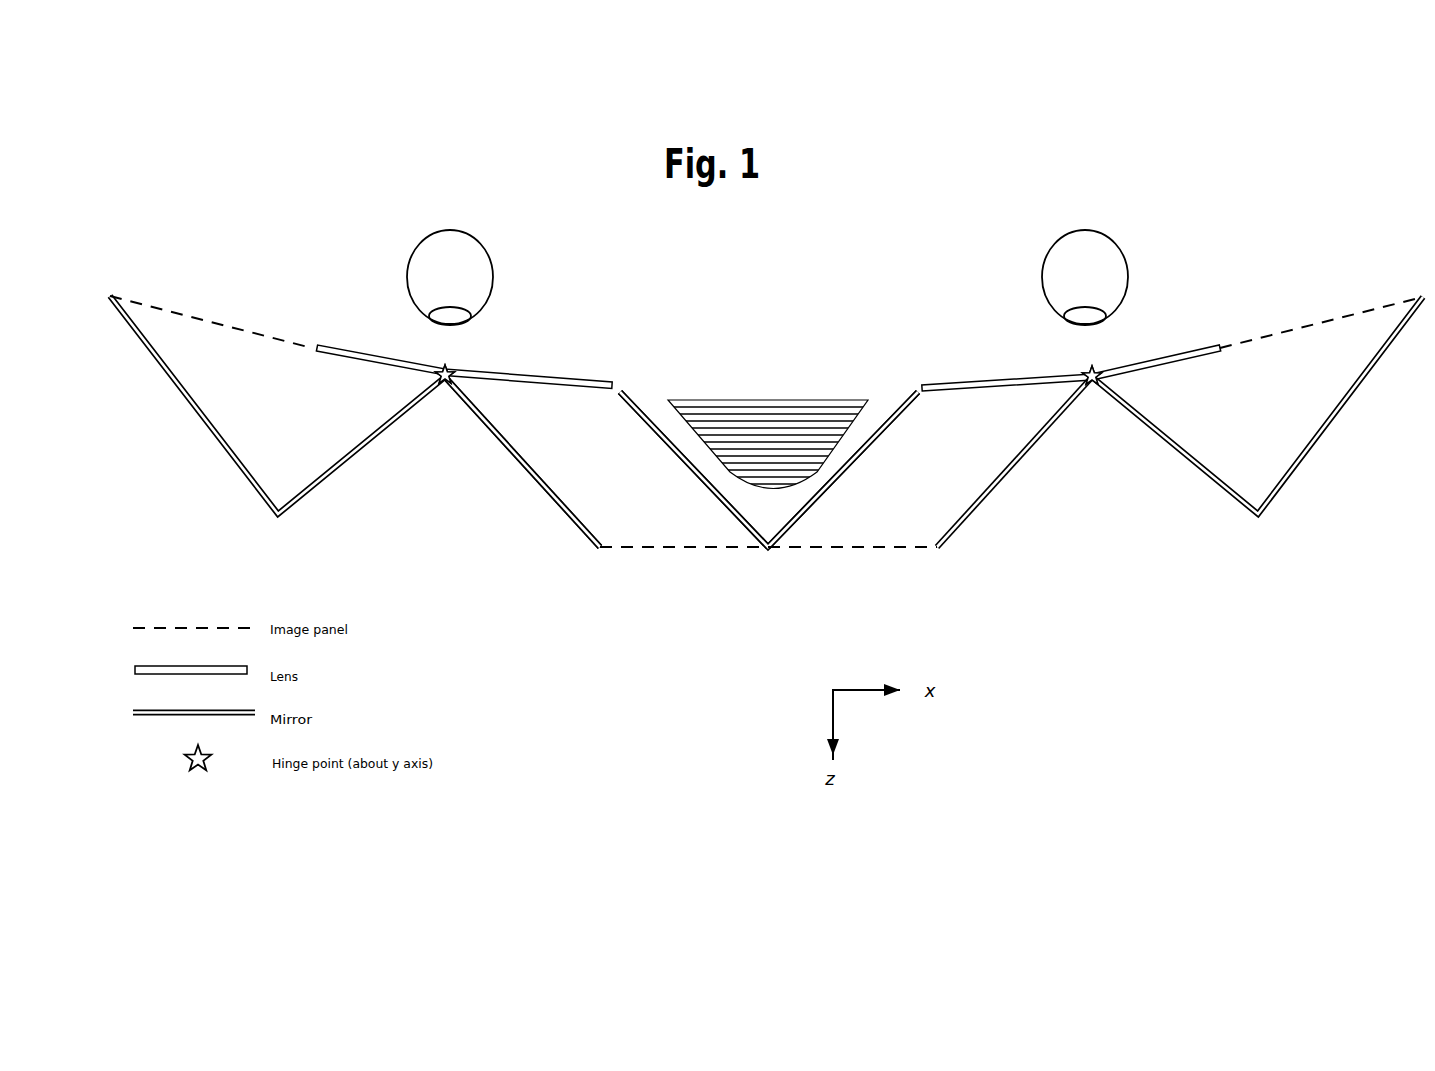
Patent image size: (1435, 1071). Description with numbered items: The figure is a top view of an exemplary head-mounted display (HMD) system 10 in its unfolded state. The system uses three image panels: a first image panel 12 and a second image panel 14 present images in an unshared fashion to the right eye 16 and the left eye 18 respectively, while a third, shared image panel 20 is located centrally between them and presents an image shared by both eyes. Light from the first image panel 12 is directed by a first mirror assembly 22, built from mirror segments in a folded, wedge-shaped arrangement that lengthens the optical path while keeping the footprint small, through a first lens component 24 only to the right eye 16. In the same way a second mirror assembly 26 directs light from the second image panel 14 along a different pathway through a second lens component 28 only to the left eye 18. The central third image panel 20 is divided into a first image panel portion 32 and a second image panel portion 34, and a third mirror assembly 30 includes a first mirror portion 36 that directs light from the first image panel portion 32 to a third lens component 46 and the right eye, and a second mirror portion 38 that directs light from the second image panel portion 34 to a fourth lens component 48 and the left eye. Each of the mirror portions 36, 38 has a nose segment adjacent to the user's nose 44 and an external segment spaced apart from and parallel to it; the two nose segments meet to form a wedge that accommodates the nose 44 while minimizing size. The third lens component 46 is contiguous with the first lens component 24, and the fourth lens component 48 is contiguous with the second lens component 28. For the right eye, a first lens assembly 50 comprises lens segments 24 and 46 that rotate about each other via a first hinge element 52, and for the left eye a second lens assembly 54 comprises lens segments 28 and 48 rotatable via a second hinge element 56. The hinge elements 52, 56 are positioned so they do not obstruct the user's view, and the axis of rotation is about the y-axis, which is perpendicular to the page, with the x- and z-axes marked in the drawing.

The head-mounted display (HMD) system 10 is at (874, 256).
The first image panel 12 is at (250, 333).
The second image panel 14 is at (1289, 328).
The right eye 16 is at (490, 268).
The left eye 18 is at (1127, 278).
The third image panel 20 is at (773, 564).
The first mirror assembly 22 is at (255, 504).
The first lens component 24 is at (332, 345).
The second mirror assembly 26 is at (1268, 518).
The second lens component 28 is at (1187, 350).
The third mirror assembly 30 is at (543, 513).
The first image panel portion 32 is at (660, 548).
The second image panel portion 34 is at (893, 550).
The first mirror portion 36 is at (633, 408).
The second mirror portion 38 is at (897, 417).
The nose 44 is at (793, 403).
The third lens component 46 is at (562, 378).
The fourth lens component 48 is at (947, 385).
The first lens assembly 50 is at (462, 360).
The first hinge element 52 is at (445, 383).
The second lens assembly 54 is at (1078, 360).
The second hinge element 56 is at (1083, 388).